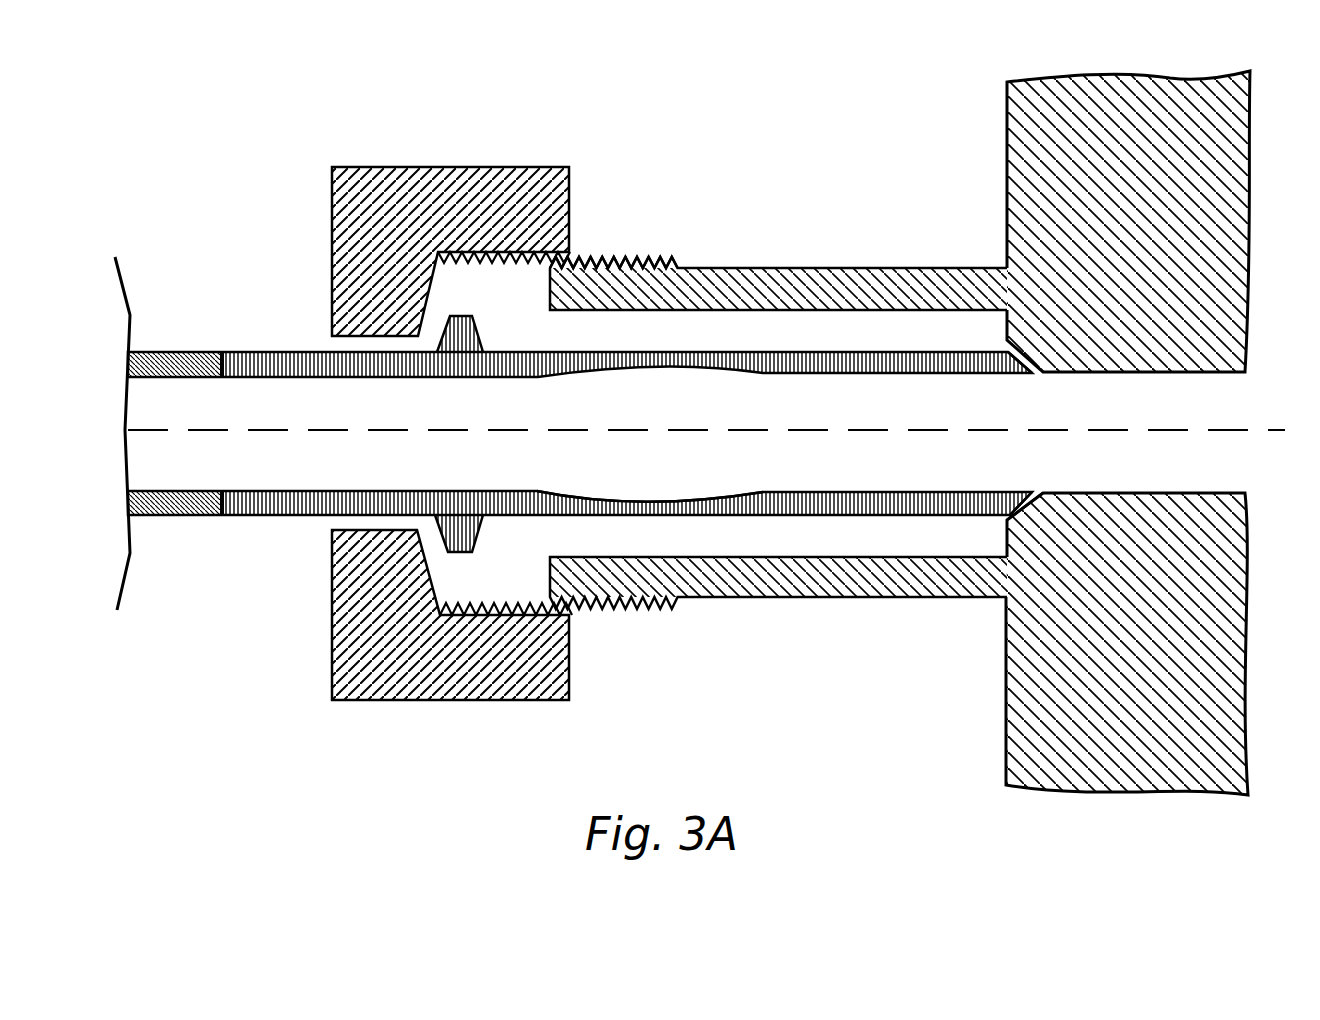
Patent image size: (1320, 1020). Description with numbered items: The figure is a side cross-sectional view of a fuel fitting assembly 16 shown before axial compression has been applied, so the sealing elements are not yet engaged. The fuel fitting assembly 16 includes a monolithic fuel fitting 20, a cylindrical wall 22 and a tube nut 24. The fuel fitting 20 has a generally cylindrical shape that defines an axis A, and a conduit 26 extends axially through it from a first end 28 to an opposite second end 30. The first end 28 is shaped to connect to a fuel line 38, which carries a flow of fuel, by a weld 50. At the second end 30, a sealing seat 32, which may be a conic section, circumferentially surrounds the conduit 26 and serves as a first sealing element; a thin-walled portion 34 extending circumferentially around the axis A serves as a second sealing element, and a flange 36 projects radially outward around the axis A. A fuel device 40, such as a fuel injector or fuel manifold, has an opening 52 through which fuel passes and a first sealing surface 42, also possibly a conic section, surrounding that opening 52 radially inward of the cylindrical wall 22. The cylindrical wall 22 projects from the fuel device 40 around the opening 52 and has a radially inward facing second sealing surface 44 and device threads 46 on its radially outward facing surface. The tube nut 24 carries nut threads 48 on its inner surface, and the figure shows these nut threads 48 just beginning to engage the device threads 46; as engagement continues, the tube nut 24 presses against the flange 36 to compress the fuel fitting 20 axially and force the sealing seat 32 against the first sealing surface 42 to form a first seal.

The fuel fitting assembly 16 is at (740, 93).
The axis A is at (218, 429).
The fuel fitting 20 is at (300, 339).
The cylindrical wall 22 is at (885, 264).
The tube nut 24 is at (450, 164).
The conduit 26 is at (318, 483).
The first end 28 is at (248, 491).
The second end 30 is at (1030, 492).
The sealing seat 32 is at (1010, 515).
The thin-walled portion 34 is at (686, 503).
The flange 36 is at (482, 335).
The fuel line 38 is at (168, 351).
The fuel device 40 is at (1002, 207).
The first sealing surface 42 is at (1036, 374).
The second sealing surface 44 is at (752, 316).
The device threads 46 is at (628, 258).
The nut threads 48 is at (478, 603).
The weld 50 is at (222, 351).
The opening 52 is at (1130, 493).